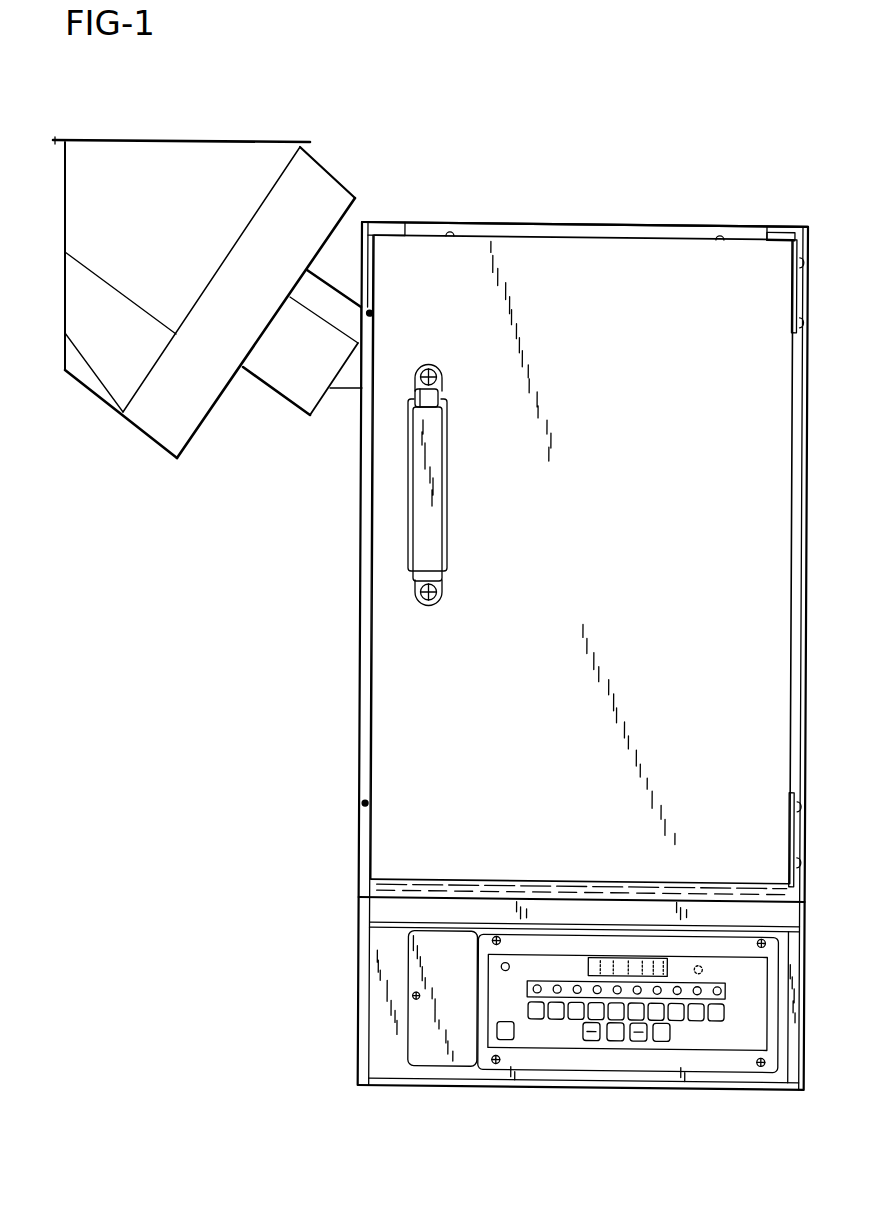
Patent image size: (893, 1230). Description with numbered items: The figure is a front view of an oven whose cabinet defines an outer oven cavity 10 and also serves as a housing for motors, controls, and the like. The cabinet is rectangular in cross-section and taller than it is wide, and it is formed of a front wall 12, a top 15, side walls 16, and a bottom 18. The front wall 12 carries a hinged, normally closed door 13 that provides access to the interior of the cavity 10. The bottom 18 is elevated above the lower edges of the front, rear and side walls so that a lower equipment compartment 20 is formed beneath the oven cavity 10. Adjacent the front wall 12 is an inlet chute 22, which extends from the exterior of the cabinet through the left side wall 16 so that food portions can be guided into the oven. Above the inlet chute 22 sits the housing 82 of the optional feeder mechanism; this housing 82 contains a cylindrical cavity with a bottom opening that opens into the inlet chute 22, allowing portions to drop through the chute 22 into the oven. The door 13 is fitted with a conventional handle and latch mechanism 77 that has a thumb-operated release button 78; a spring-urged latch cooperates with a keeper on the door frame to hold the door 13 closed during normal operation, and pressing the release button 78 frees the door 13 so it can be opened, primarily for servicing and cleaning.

The outer oven cavity 10 is at (432, 212).
The front wall 12 is at (383, 1060).
The door 13 is at (613, 552).
The top 15 is at (513, 216).
The side walls 16 is at (785, 687).
The bottom 18 is at (403, 898).
The lower equipment compartment 20 is at (741, 1031).
The inlet chute 22 is at (356, 331).
The handle and latch mechanism 77 is at (458, 480).
The thumb-operated release button 78 is at (437, 397).
The housing 82 is at (250, 307).